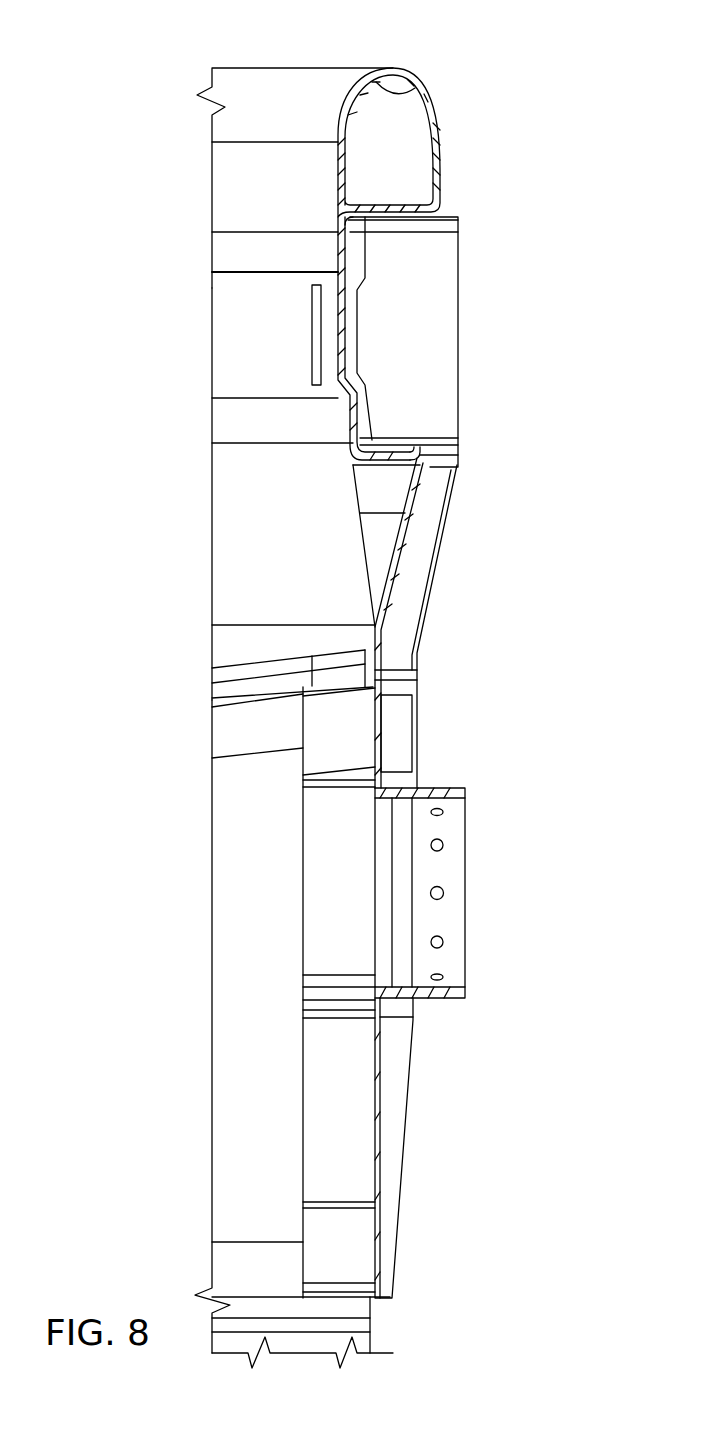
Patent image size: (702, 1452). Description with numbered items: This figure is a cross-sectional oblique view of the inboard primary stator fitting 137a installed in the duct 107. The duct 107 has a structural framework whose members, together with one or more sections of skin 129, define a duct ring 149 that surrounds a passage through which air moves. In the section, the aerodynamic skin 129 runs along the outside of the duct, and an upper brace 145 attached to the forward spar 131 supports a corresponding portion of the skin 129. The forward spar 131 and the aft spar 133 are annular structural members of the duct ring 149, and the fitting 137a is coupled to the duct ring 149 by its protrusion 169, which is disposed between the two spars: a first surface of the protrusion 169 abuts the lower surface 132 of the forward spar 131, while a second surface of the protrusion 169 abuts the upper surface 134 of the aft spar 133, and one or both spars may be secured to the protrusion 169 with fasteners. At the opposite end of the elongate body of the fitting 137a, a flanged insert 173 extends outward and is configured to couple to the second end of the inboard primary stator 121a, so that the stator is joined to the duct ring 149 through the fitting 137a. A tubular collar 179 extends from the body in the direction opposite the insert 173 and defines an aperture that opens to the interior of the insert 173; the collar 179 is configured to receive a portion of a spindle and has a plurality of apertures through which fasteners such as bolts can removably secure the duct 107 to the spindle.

The duct 107 is at (534, 67).
The skin 129 is at (263, 77).
The upper brace 145 is at (392, 90).
The forward spar 131 is at (437, 194).
The lower surface 132 is at (392, 220).
The protrusion 169 is at (452, 323).
The upper surface 134 is at (385, 453).
The aft spar 133 is at (407, 452).
The duct ring 149 is at (237, 546).
The inboard primary stator fitting 137a is at (435, 570).
The inboard primary stator 121a is at (237, 895).
The tubular collar 179 is at (465, 893).
The insert 173 is at (358, 1102).